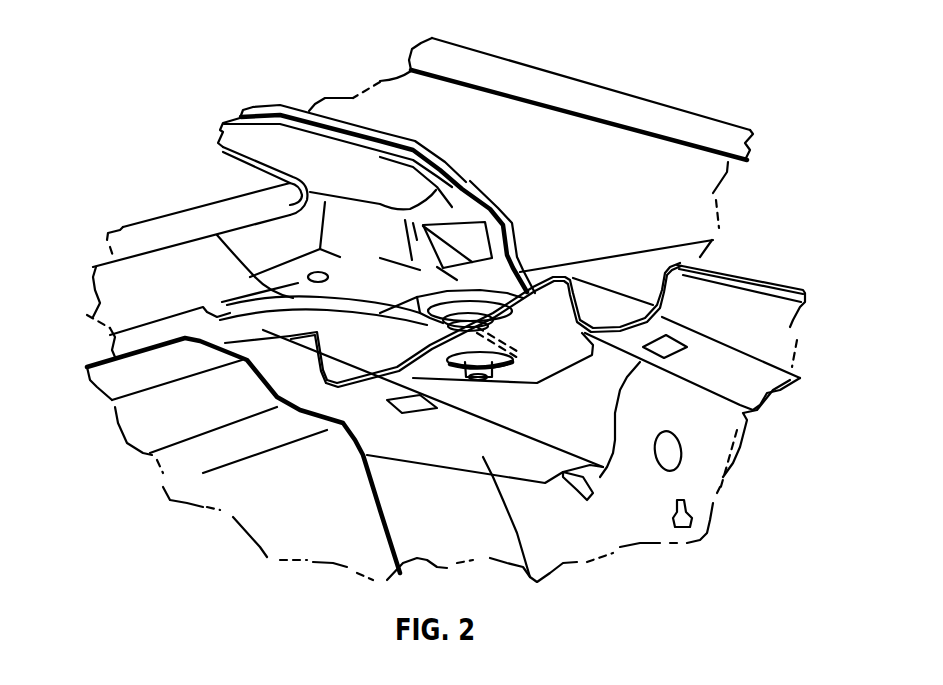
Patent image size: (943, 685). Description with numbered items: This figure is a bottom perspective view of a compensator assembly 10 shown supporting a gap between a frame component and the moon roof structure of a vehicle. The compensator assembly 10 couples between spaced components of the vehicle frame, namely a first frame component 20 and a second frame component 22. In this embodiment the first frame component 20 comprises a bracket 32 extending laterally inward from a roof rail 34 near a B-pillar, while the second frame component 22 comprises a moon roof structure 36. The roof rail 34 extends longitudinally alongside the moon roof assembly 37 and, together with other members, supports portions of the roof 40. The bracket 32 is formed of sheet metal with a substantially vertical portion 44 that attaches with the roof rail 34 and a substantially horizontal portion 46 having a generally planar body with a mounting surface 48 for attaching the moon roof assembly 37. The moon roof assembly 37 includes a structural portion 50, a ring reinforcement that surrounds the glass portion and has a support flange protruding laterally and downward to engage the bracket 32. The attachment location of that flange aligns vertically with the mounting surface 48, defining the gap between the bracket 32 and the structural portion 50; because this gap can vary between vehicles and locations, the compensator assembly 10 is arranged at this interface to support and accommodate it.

The compensator assembly 10 is at (412, 338).
The first frame component 20 is at (533, 328).
The second frame component 22 is at (448, 202).
The bracket 32 is at (705, 415).
The roof rail 34 is at (715, 235).
The moon roof structure 36 is at (297, 142).
The moon roof assembly 37 is at (171, 206).
The roof 40 is at (450, 110).
The substantially vertical portion 44 is at (628, 528).
The substantially horizontal portion 46 is at (767, 322).
The mounting surface 48 is at (412, 333).
The structural portion 50 is at (137, 293).